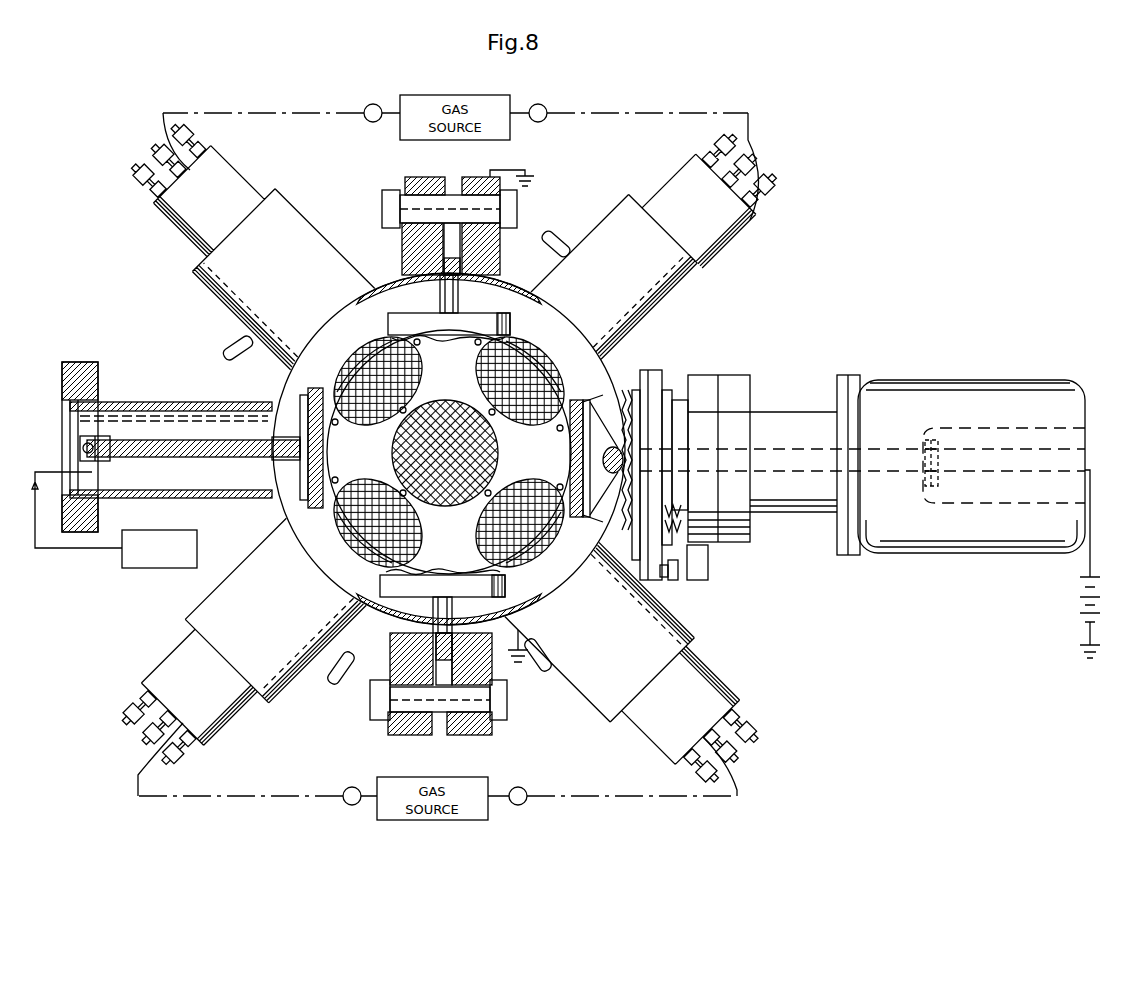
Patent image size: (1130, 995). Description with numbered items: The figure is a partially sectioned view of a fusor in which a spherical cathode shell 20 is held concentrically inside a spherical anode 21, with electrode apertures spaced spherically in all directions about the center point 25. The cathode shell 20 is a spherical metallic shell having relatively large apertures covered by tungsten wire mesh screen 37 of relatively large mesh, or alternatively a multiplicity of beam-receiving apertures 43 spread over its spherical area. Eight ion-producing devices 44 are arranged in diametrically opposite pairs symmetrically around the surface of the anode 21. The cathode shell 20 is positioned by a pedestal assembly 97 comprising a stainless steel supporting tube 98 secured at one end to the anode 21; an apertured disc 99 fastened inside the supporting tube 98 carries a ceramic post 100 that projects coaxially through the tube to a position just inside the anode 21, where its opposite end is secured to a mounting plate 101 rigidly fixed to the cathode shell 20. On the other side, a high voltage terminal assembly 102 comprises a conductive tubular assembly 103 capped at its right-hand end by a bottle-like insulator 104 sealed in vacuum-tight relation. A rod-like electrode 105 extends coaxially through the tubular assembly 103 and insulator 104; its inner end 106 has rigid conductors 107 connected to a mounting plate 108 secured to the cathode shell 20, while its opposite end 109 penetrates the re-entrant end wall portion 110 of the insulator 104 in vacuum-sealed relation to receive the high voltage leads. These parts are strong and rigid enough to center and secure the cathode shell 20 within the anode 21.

The cathode shell 20 is at (340, 537).
The spherical anode 21 is at (395, 278).
The center point 25 is at (447, 457).
The mesh screen 37 is at (404, 373).
The apertures 43 is at (484, 372).
The ion-producing devices 44 is at (205, 298).
The pedestal assembly 97 is at (153, 399).
The supporting tube 98 is at (200, 402).
The apertured disc 99 is at (80, 440).
The ceramic post 100 is at (207, 430).
The mounting plate 101 is at (315, 475).
The high voltage terminal assembly 102 is at (1022, 380).
The conductive tubular assembly 103 is at (787, 412).
The bottle-like insulator 104 is at (955, 380).
The rod-like electrode 105 is at (810, 475).
The inner end of electrode 106 is at (613, 473).
The rigid conductors 107 is at (608, 401).
The mounting plate 108 is at (570, 467).
The opposite end of electrode 109 is at (905, 473).
The re-entrant end wall portion 110 is at (940, 442).